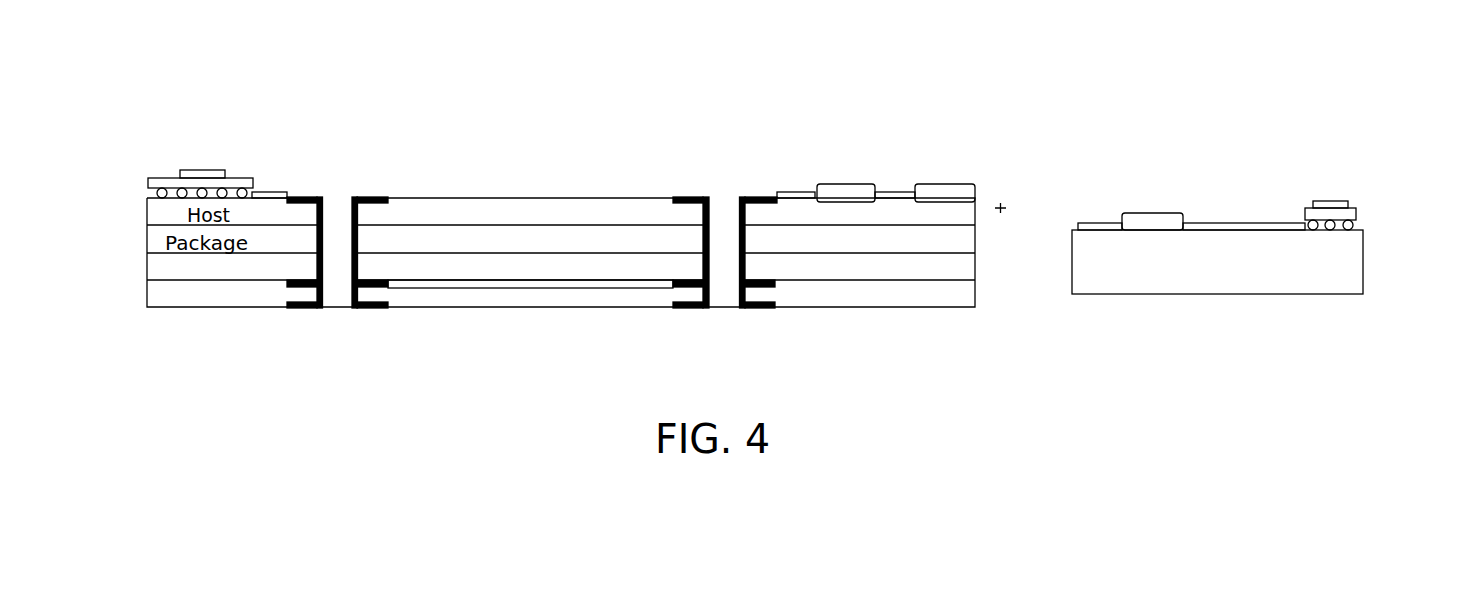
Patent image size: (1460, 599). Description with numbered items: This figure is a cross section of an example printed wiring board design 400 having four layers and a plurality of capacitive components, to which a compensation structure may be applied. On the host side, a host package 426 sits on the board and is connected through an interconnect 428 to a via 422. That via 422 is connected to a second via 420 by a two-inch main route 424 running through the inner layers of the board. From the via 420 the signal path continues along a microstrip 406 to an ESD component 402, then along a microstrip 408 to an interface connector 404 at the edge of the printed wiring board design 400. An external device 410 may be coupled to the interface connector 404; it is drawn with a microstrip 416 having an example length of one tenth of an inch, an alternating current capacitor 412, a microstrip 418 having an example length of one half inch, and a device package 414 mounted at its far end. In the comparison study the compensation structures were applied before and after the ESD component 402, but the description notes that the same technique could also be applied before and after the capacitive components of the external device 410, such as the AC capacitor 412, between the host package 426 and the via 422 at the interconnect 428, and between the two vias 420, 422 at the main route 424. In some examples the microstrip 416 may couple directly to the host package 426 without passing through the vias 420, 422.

The printed wiring board design 400 is at (733, 406).
The ESD component 402 is at (817, 185).
The interface connector 404 is at (917, 183).
The microstrip 406 is at (795, 192).
The microstrip 408 is at (885, 192).
The external device 410 is at (1292, 294).
The alternating current capacitor (AC cap) 412 is at (1153, 222).
The device package 414 is at (1357, 205).
The microstrip 416 is at (1095, 223).
The microstrip 418 is at (1225, 223).
The via 420 is at (723, 197).
The via 422 is at (340, 197).
The main route 424 is at (522, 288).
The host package 426 is at (200, 170).
The interconnect 428 is at (272, 192).